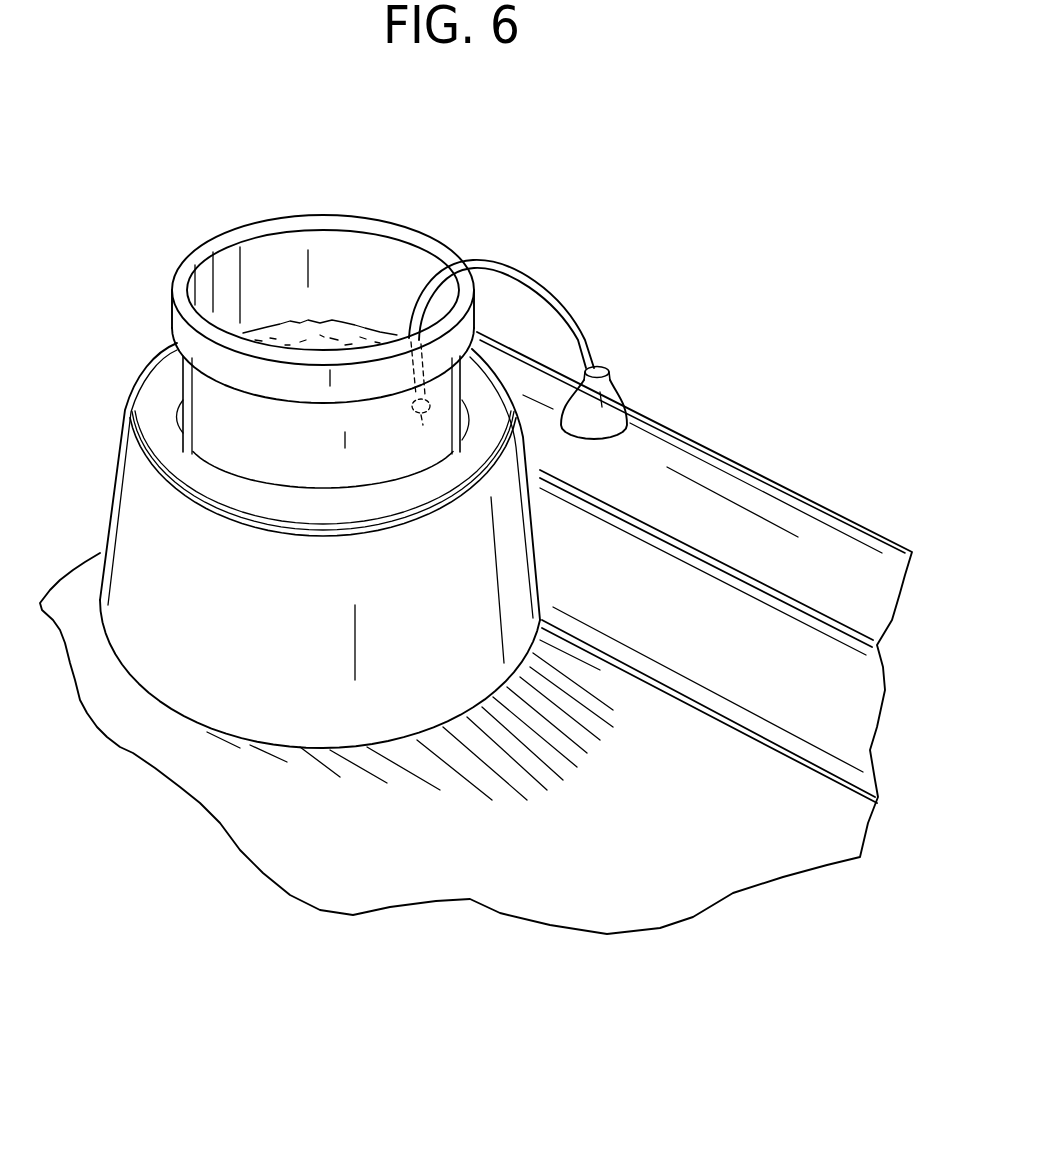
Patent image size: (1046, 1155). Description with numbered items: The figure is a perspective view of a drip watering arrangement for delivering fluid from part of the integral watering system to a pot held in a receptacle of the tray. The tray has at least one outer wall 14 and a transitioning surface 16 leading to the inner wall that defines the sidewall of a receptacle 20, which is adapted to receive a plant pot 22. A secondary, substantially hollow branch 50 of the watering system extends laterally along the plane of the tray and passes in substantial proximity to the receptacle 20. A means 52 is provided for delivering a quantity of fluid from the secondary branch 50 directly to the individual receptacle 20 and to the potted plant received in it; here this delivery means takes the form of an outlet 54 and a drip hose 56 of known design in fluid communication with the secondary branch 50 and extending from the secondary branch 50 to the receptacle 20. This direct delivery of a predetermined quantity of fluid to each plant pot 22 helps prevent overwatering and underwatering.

The outer wall 14 is at (133, 523).
The transitioning surface 16 is at (158, 378).
The receptacle 20 is at (284, 455).
The plant pot 22 is at (270, 225).
The secondary branch 50 is at (755, 497).
The means for delivering fluid 52 is at (642, 381).
The outlet 54 is at (608, 407).
The drip hose 56 is at (520, 270).